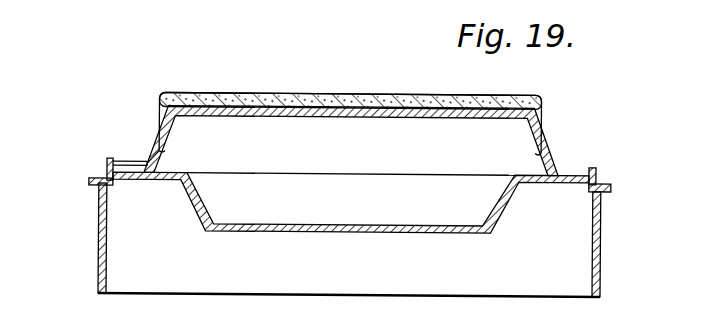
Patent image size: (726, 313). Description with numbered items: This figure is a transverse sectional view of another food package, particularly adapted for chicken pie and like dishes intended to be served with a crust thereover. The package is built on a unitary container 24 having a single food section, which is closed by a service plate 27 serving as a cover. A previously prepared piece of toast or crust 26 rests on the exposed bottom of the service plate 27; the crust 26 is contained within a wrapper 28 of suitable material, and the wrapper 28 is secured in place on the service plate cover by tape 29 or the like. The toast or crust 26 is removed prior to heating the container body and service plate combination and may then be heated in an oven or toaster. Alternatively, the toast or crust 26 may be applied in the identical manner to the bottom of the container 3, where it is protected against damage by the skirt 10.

The skirt 10 is at (98, 214).
The unitary container 24 is at (609, 229).
The container 3 is at (165, 180).
The toast or crust 26 is at (197, 93).
The service plate 27 is at (332, 115).
The wrapper 28 is at (157, 107).
The tape 29 is at (152, 148).